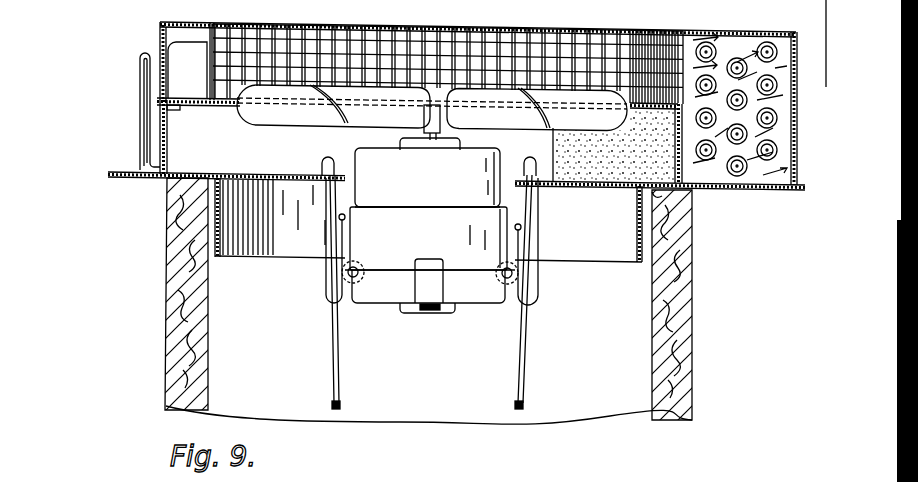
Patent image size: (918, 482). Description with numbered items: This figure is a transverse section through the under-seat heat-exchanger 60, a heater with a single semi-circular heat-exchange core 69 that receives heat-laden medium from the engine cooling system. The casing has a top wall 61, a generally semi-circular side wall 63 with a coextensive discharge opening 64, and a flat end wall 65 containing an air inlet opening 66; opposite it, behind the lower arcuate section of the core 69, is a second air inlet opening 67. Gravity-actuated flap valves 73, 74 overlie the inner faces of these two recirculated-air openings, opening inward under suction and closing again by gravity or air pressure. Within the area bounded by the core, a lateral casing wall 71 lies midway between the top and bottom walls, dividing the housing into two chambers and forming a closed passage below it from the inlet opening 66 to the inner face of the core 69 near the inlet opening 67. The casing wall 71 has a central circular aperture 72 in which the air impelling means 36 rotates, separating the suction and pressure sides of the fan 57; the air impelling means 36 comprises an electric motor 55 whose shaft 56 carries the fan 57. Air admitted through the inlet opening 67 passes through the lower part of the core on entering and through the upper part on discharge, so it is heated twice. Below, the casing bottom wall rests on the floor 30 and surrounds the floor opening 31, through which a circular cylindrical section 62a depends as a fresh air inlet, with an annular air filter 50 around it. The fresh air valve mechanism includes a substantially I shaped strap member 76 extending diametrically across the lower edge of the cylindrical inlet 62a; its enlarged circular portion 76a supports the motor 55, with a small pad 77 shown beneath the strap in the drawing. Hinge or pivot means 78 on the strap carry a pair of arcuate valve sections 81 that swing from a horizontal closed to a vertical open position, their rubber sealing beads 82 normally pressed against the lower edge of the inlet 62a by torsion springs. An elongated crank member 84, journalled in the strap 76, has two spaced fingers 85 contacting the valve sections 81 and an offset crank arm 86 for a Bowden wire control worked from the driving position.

The base plate 30 is at (123, 179).
The floor opening 31 is at (652, 194).
The air impelling means 36 is at (413, 173).
The annular air filter 50 is at (167, 302).
The electric motor 55 is at (432, 193).
The shaft 56 is at (440, 127).
The fan 57 is at (348, 120).
The under-seat heat-exchanger 60 is at (631, 22).
The top wall 61 is at (567, 32).
The circular cylindrical section 62a is at (230, 258).
The semi-circular side wall 63 is at (797, 96).
The discharge opening 64 is at (797, 42).
The flat end wall 65 is at (162, 35).
The air inlet opening 66 is at (166, 100).
The second air inlet opening 67 is at (678, 120).
The heat-exchange core 69 is at (763, 44).
The lateral casing wall 71 is at (218, 104).
The central circular aperture 72 is at (241, 104).
The flap valve 73 is at (168, 131).
The flap valve 74 is at (590, 150).
The I shaped strap member 76 is at (434, 290).
The enlarged circular portion 76a is at (367, 305).
The resilient pad 77 is at (426, 312).
The hinge or pivot means 78 is at (336, 304).
The arcuate valve sections 81 is at (341, 360).
The rubber sealing beads 82 is at (339, 216).
The elongated crank member 84 is at (157, 168).
The fingers 85 is at (345, 270).
The offset crank arm 86 is at (150, 130).